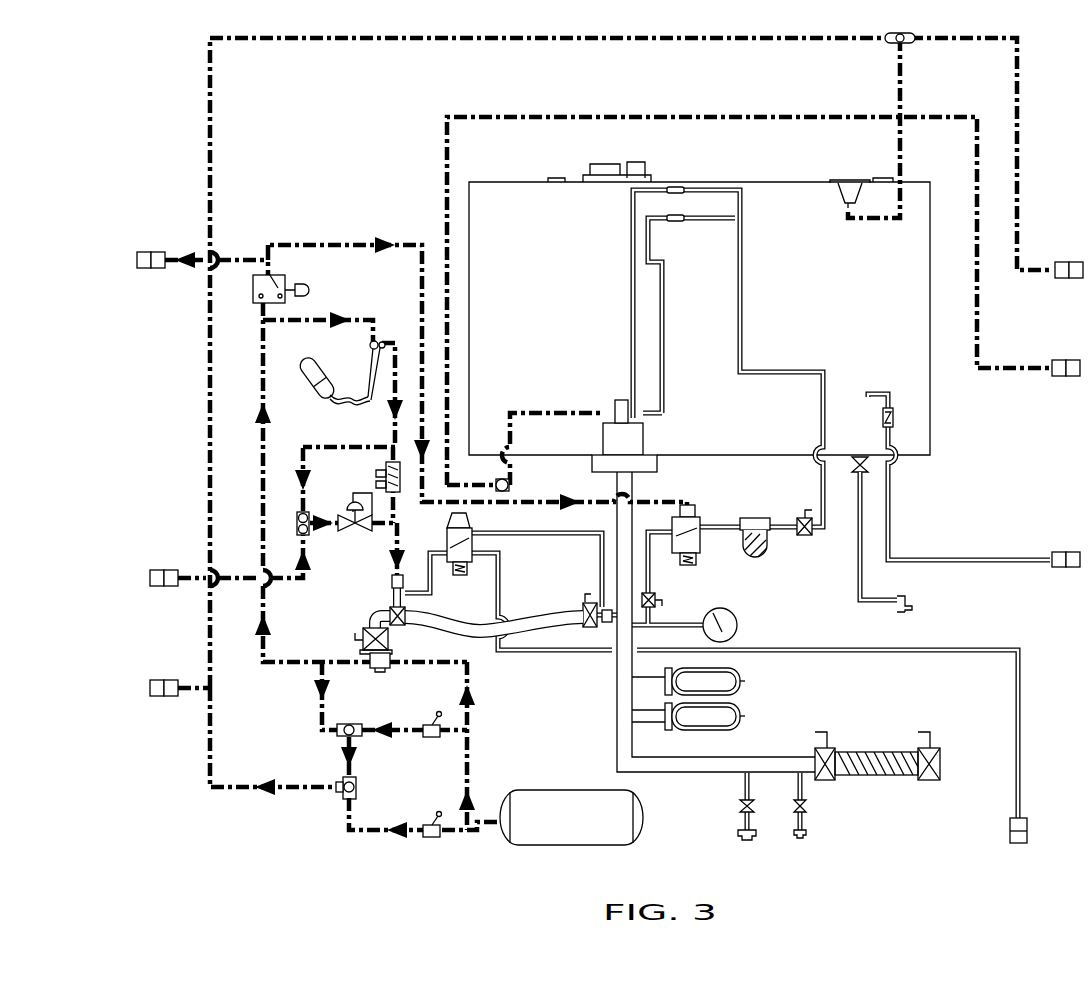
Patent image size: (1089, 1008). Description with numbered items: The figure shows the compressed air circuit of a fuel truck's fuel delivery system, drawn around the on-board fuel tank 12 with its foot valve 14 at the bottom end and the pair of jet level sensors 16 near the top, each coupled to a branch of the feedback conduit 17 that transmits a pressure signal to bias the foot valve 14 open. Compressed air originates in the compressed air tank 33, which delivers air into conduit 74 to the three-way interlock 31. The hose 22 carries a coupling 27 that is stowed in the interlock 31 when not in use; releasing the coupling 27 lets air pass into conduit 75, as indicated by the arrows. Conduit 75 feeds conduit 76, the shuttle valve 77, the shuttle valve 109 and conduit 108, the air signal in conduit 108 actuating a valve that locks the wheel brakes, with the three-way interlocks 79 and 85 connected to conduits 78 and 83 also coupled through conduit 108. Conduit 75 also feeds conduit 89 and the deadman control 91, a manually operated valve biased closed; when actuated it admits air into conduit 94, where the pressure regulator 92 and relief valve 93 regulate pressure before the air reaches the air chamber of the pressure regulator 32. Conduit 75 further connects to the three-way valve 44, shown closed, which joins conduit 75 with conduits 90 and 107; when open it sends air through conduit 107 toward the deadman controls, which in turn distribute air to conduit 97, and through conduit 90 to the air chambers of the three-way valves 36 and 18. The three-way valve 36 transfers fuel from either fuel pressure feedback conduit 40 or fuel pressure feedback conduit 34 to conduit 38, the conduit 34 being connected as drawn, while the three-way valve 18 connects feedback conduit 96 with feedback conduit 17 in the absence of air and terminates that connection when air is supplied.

The on-board fuel tank 12 is at (853, 310).
The foot valve 14 is at (640, 436).
The jet level sensors 16 is at (676, 222).
The feedback conduit 17 is at (773, 376).
The three-way valve 18 is at (700, 555).
The hose 22 is at (488, 640).
The coupling 27 is at (363, 631).
The three-way interlock 31 is at (384, 670).
The pressure regulator 32 is at (389, 600).
The compressed air tank 33 is at (580, 832).
The fuel pressure feedback conduit 34 is at (548, 536).
The three-way valve 36 is at (460, 576).
The conduit 38 is at (426, 565).
The fuel pressure feedback conduit 40 is at (500, 607).
The three-way valve 44 is at (306, 290).
The conduit 74 is at (470, 775).
The conduit 75 is at (258, 375).
The conduit 76 is at (320, 728).
The shuttle valve 77 is at (350, 725).
The conduit 78 is at (408, 736).
The three-way interlock 79 is at (434, 738).
The conduit 83 is at (346, 814).
The three-way interlock 85 is at (431, 838).
The conduit 89 is at (294, 322).
The conduit 90 is at (333, 243).
The deadman control 91 is at (315, 377).
The pressure regulator 92 is at (350, 502).
The relief valve 93 is at (392, 462).
The conduit 94 is at (390, 538).
The feedback conduit 96 is at (654, 588).
The conduit 97 is at (237, 576).
The conduit 107 is at (173, 258).
The conduit 108 is at (210, 772).
The shuttle valve 109 is at (357, 787).